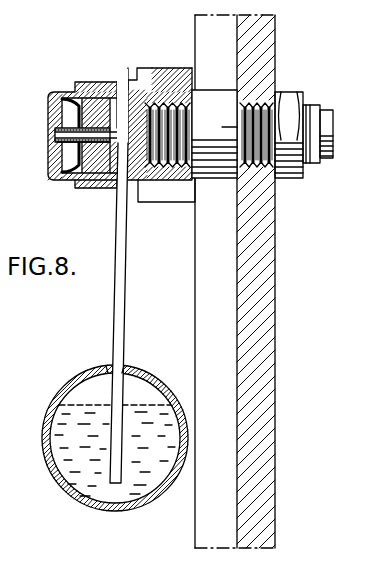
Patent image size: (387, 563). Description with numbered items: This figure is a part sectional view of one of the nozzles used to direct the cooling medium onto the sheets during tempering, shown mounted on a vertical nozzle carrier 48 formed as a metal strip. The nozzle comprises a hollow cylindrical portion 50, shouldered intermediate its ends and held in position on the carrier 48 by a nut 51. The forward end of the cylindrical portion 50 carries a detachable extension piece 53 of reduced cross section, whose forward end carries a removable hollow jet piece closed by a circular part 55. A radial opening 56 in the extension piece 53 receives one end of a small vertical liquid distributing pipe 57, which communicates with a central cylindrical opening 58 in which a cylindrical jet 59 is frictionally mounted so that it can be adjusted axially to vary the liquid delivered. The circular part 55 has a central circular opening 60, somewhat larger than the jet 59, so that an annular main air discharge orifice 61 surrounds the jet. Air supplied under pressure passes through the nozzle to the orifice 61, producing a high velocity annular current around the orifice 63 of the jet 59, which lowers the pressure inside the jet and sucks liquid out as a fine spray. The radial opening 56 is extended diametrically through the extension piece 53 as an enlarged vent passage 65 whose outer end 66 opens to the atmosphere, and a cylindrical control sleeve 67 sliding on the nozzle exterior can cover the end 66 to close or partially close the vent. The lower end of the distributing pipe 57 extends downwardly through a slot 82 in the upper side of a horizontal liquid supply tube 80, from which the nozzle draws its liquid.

The nozzle carrier 48 is at (257, 60).
The hollow cylindrical portion 50 is at (207, 131).
The nut 51 is at (282, 177).
The extension piece 53 is at (161, 85).
The circular part 55 is at (62, 115).
The radial opening 56 is at (142, 183).
The liquid distributing pipe 57 is at (122, 263).
The central cylindrical opening 58 is at (108, 157).
The cylindrical jet 59 is at (70, 180).
The circular opening 60 is at (62, 123).
The main air discharge orifice 61 is at (58, 147).
The orifice of the jet 63 is at (57, 132).
The vent passage 65 is at (122, 108).
The outer end of vent passage 66 is at (132, 80).
The control sleeve 67 is at (92, 82).
The liquid supply tube 80 is at (172, 367).
The slot 82 is at (107, 364).